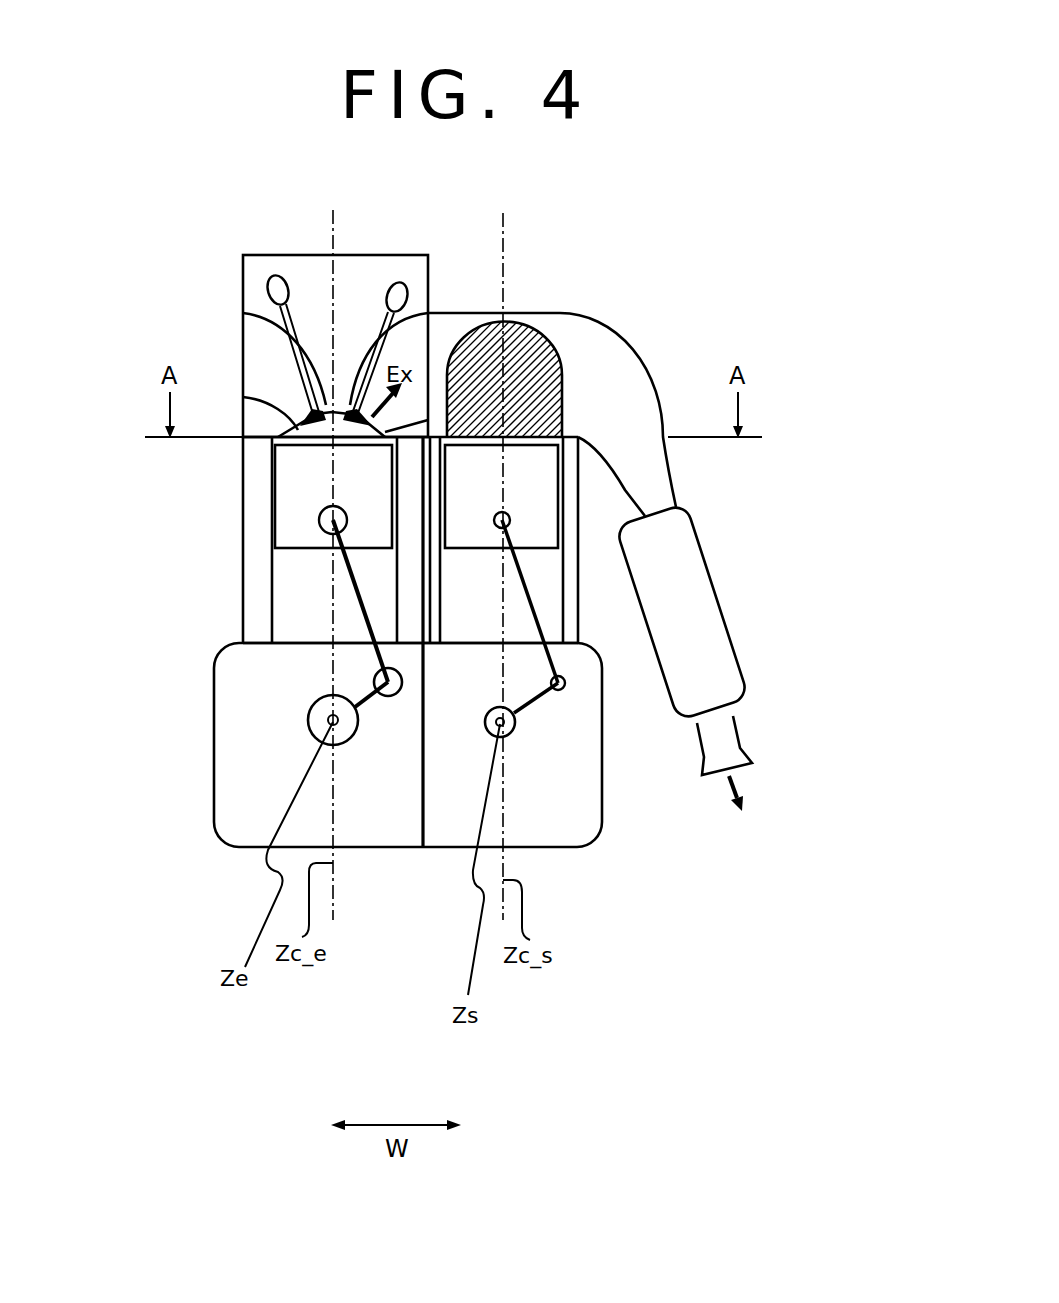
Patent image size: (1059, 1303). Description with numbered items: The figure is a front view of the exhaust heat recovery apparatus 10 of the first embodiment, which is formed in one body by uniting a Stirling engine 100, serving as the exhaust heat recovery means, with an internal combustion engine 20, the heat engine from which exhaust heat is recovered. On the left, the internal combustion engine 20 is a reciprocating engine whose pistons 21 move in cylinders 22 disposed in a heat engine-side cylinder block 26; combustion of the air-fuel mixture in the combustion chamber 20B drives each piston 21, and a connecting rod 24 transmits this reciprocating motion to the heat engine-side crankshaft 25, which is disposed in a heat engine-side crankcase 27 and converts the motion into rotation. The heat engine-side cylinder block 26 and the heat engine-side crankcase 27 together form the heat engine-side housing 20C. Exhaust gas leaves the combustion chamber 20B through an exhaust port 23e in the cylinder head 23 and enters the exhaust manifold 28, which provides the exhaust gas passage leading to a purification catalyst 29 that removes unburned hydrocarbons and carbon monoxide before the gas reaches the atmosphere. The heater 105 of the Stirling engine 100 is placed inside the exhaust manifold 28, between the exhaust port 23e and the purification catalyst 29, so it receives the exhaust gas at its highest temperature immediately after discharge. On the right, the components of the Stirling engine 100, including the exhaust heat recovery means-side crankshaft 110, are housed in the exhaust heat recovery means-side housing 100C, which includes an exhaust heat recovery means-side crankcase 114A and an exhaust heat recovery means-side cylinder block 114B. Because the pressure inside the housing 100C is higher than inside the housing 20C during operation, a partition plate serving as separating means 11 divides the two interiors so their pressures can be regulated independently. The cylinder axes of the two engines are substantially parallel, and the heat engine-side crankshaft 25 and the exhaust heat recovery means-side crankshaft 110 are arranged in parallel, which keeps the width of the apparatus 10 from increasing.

The exhaust heat recovery apparatus 10 is at (808, 234).
The separating means (partition plate) 11 is at (418, 807).
The internal combustion engine 20 is at (180, 808).
The combustion chamber 20B is at (296, 450).
The heat engine-side housing 20C is at (87, 690).
The piston 21 is at (285, 540).
The cylinder 22 is at (285, 506).
The cylinder head 23 is at (258, 270).
The exhaust port 23e is at (432, 336).
The connecting rod 24 is at (350, 580).
The heat engine-side crankshaft 25 is at (353, 742).
The heat engine-side cylinder block 26 is at (240, 630).
The heat engine-side crankcase 27 is at (215, 717).
The exhaust manifold 28 is at (532, 310).
The purification catalyst 29 is at (708, 607).
The Stirling engine 100 is at (577, 882).
The exhaust heat recovery means-side housing 100C is at (828, 870).
The heater 105 is at (568, 338).
The exhaust heat recovery means-side crankshaft 110 is at (500, 724).
The exhaust heat recovery means-side crankcase 114A is at (601, 808).
The exhaust heat recovery means-side cylinder block 114B is at (578, 615).